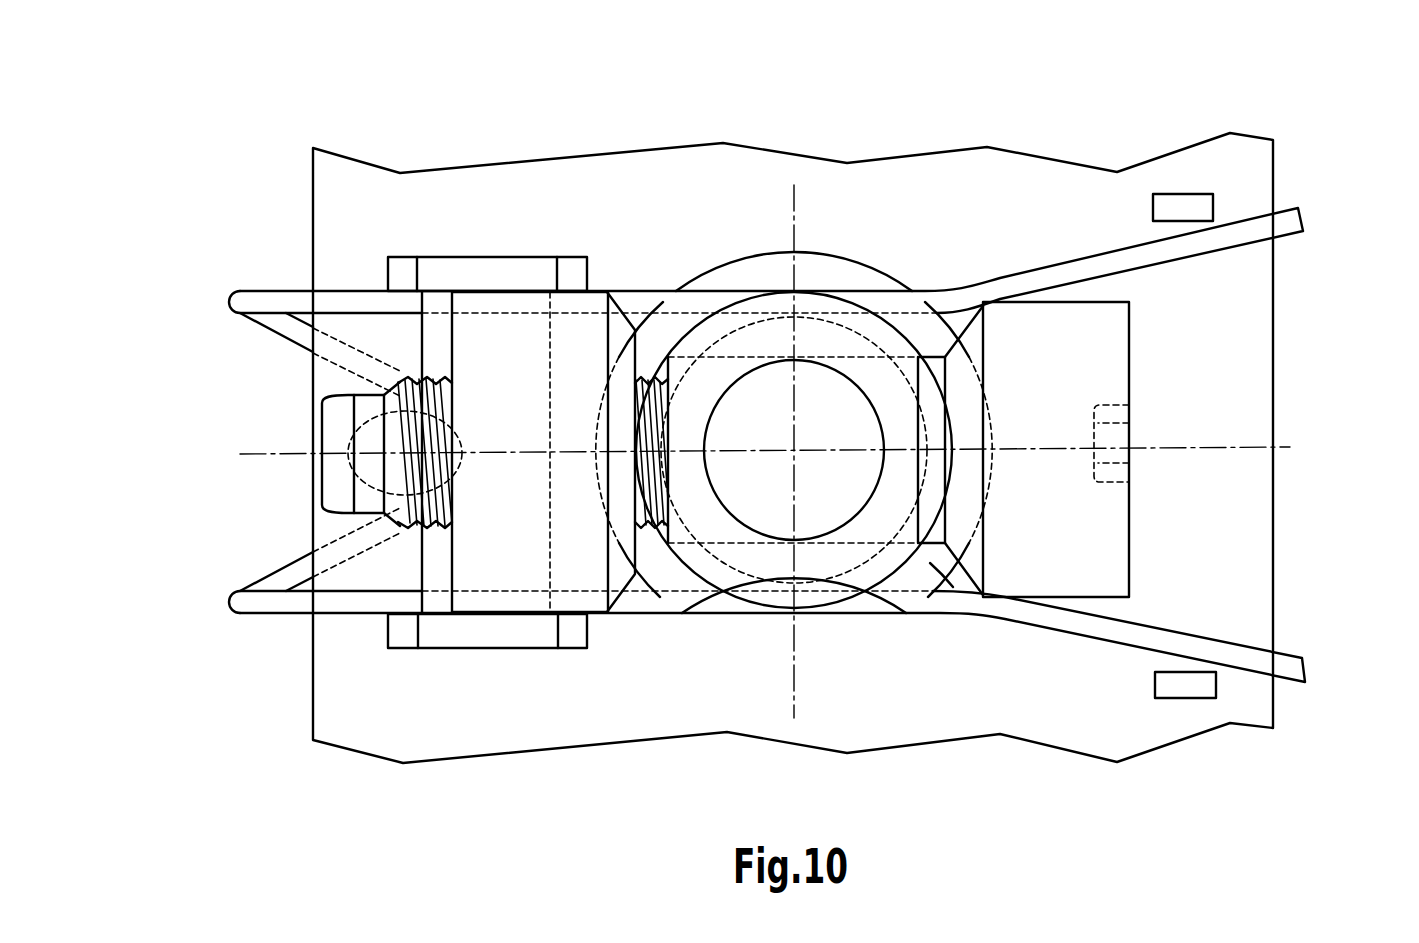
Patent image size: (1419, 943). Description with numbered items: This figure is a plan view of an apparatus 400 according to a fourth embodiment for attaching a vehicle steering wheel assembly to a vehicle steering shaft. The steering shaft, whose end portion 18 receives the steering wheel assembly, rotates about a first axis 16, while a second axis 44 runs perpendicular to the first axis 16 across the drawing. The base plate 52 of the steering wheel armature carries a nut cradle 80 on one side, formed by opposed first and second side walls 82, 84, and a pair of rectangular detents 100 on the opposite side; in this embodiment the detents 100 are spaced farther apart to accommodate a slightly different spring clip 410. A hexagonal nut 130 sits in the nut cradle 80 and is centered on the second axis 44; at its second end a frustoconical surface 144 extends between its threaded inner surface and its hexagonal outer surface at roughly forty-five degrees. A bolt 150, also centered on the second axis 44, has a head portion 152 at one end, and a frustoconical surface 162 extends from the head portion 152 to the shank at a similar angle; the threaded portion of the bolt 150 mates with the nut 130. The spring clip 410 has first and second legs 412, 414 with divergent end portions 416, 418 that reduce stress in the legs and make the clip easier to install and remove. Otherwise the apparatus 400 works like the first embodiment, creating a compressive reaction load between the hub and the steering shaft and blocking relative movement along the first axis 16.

The apparatus 400 is at (778, 425).
The base plate 52 is at (963, 173).
The detents 100 is at (1188, 207).
The spring clip 410 is at (778, 459).
The divergent end portion 418 is at (1203, 242).
The divergent end portion 416 is at (1202, 648).
The nut cradle 80 is at (400, 407).
The second side wall 84 is at (458, 265).
The first side wall 82 is at (500, 628).
The nut 130 is at (490, 358).
The frustoconical surface 144 is at (618, 300).
The second leg 414 is at (923, 297).
The first leg 412 is at (913, 598).
The frustoconical surface 162 is at (966, 578).
The end portion 18 is at (772, 497).
The first axis 16 is at (797, 447).
The second axis 44 is at (1288, 443).
The bolt 150 is at (1115, 449).
The head portion 152 is at (1080, 543).